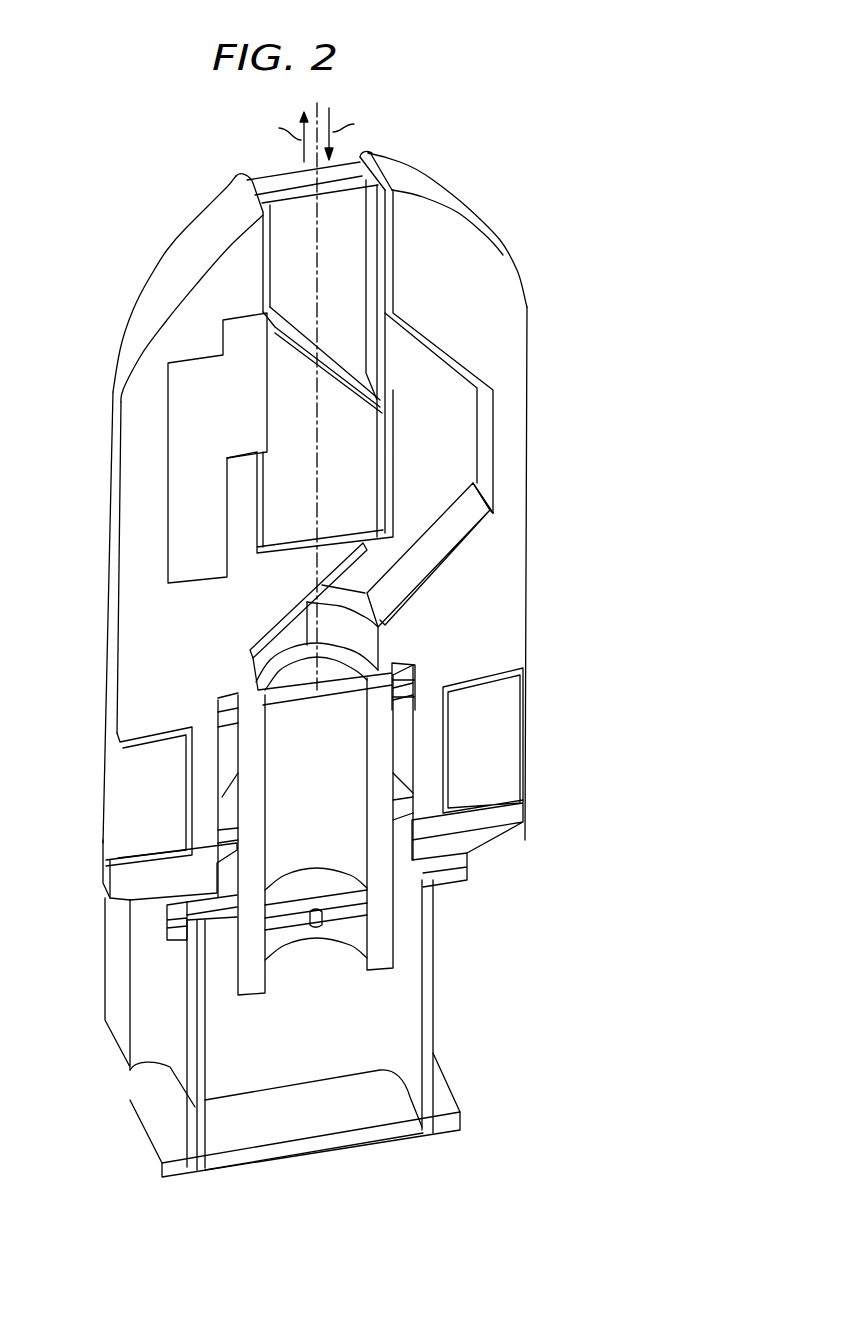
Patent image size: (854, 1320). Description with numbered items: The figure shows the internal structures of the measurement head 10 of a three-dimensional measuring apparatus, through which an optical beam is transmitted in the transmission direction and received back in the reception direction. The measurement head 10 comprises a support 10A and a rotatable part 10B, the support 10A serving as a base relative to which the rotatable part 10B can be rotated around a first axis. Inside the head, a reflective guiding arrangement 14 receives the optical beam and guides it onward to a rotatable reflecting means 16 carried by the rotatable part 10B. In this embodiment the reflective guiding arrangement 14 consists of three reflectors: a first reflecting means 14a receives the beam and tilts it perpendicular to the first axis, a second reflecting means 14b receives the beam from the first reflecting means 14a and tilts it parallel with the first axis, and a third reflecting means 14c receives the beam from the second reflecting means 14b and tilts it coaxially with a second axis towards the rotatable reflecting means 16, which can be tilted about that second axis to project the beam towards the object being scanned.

The measurement head 10 is at (133, 215).
The support 10A is at (435, 1000).
The rotatable part 10B is at (108, 542).
The reflective guiding arrangement 14 is at (334, 445).
The first reflecting means 14a is at (297, 601).
The second reflecting means 14b is at (437, 548).
The third reflecting means 14c is at (428, 341).
The rotatable reflecting means 16 is at (327, 376).